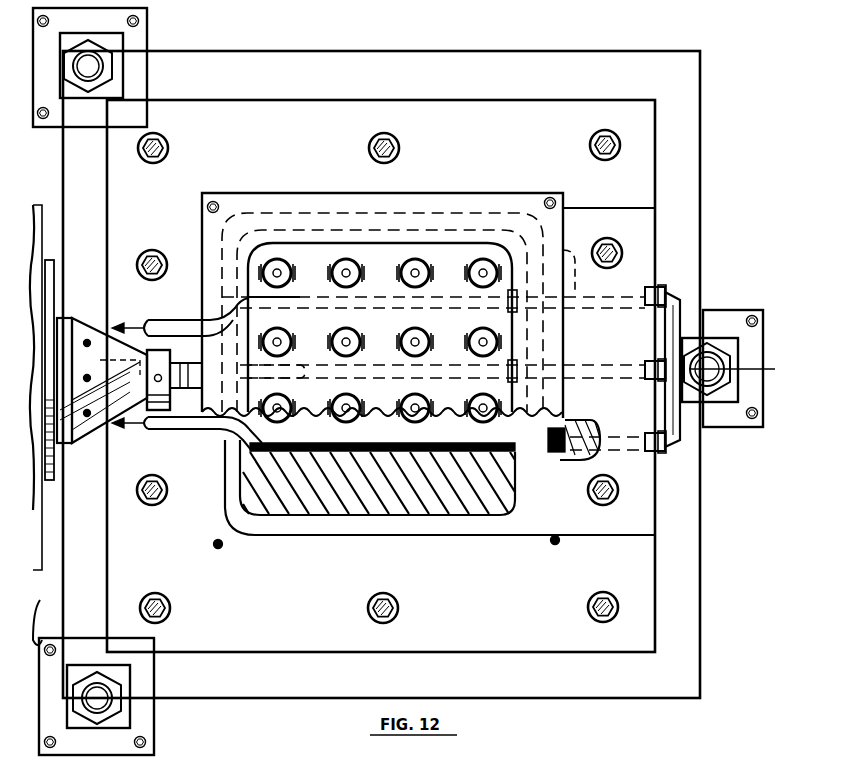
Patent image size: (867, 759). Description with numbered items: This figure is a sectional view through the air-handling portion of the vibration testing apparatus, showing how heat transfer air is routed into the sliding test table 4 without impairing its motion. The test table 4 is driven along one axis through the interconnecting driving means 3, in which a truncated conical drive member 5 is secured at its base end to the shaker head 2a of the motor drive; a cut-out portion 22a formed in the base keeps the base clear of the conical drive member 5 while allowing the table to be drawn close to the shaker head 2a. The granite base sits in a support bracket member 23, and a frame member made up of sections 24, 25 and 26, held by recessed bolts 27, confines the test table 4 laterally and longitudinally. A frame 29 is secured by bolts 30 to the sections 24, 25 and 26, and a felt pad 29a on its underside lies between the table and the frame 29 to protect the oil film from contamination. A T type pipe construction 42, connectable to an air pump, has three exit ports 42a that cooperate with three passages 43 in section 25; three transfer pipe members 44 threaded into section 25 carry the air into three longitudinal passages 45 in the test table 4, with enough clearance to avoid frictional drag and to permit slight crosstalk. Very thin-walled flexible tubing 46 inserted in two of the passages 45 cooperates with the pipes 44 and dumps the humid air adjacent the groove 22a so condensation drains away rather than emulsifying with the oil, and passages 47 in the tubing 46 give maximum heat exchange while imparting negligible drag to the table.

The shaker head 2a is at (50, 275).
The interconnecting driving means 3 is at (93, 312).
The driven test table 4 is at (460, 498).
The truncated conical drive member 5 is at (123, 393).
The cut-out portion 22a is at (112, 326).
The support bracket member 23 is at (762, 352).
The frame member section 24 is at (418, 100).
The frame member section 25 is at (630, 505).
The frame member section 26 is at (470, 625).
The recessed bolts 27 is at (590, 140).
The frame 29 is at (568, 348).
The pad 29a is at (278, 400).
The bolts 30 is at (218, 205).
The T type pipe construction 42 is at (694, 312).
The exit ports 42a is at (665, 290).
The passages 43 is at (608, 296).
The transfer pipe members 44 is at (560, 482).
The longitudinal passages 45 is at (300, 296).
The flexible tubing 46 is at (450, 296).
The passages 47 is at (382, 298).